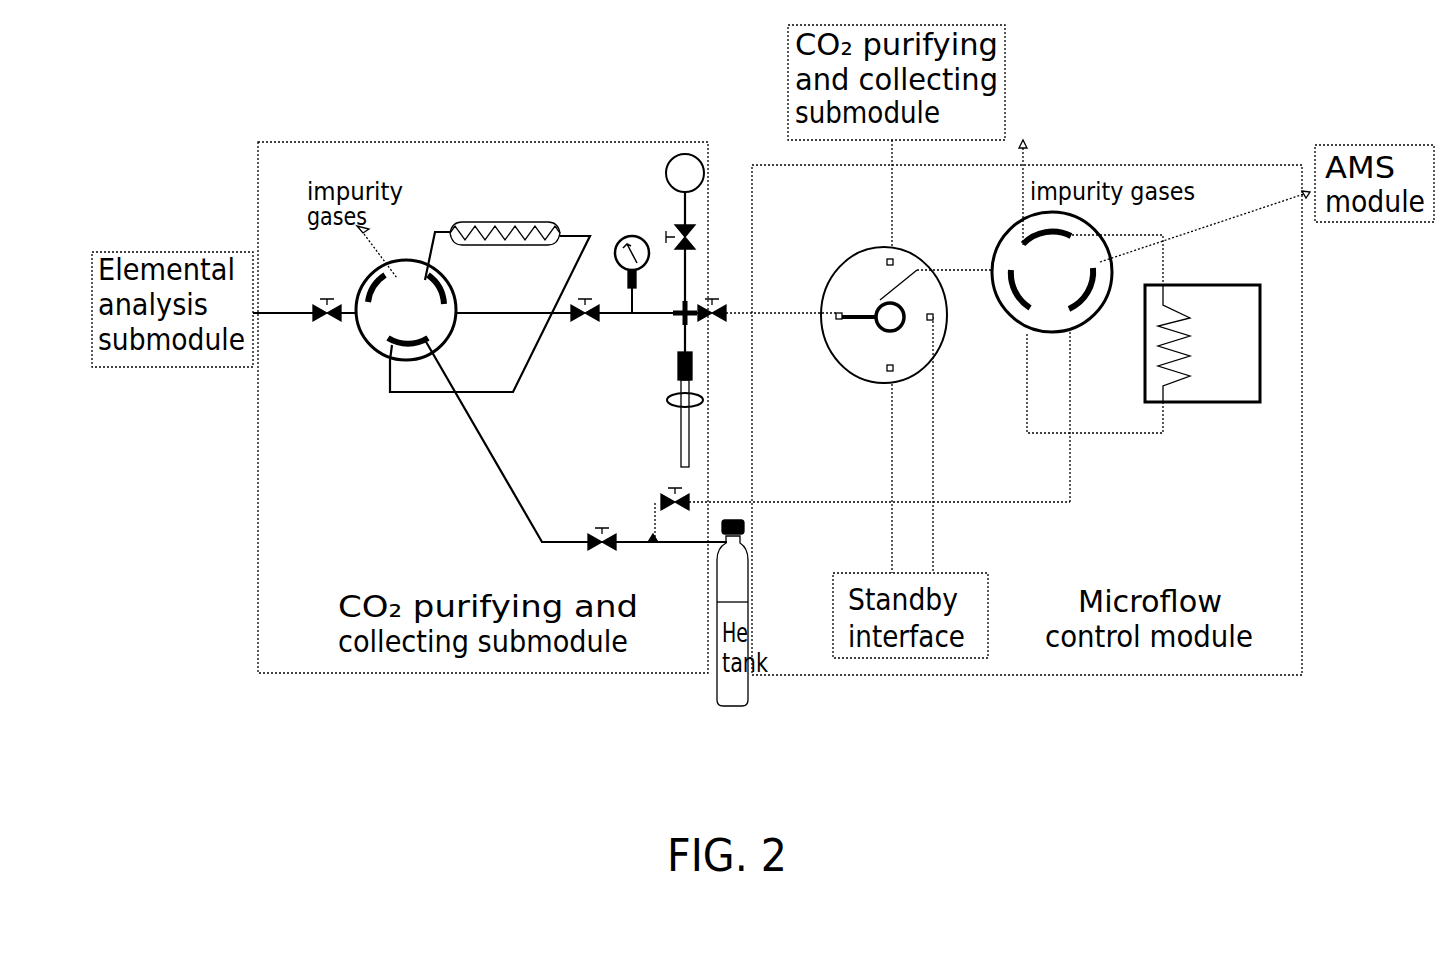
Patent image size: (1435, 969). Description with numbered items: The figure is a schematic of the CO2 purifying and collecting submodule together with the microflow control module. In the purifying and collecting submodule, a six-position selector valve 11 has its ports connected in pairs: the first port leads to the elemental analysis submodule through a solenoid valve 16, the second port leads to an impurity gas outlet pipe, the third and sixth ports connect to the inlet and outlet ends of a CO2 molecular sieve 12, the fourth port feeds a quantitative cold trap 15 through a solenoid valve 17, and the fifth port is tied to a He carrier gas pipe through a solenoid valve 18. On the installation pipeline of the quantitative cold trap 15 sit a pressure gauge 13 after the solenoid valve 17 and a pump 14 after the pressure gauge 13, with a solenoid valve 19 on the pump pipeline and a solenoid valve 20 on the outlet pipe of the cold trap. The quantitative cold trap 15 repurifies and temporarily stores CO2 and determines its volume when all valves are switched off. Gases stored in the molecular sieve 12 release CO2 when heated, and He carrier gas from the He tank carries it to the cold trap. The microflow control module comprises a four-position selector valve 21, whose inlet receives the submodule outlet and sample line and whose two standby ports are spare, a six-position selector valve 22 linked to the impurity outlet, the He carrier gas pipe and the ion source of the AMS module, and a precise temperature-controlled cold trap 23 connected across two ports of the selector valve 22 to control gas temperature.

The 6-position selector valve 11 is at (398, 262).
The CO2 molecular sieve 12 is at (510, 215).
The pressure gauge 13 is at (616, 243).
The pump 14 is at (660, 178).
The quantitative cold trap 15 is at (672, 438).
The solenoid valve 16 is at (318, 298).
The solenoid valve 17 is at (580, 343).
The solenoid valve 18 is at (598, 525).
The solenoid valve 19 is at (696, 237).
The solenoid valve 20 is at (714, 290).
The 4-position selector valve 21 is at (837, 265).
The 6-position selector valve 22 is at (990, 247).
The precise temperature-controlled cold trap 23 is at (1200, 412).